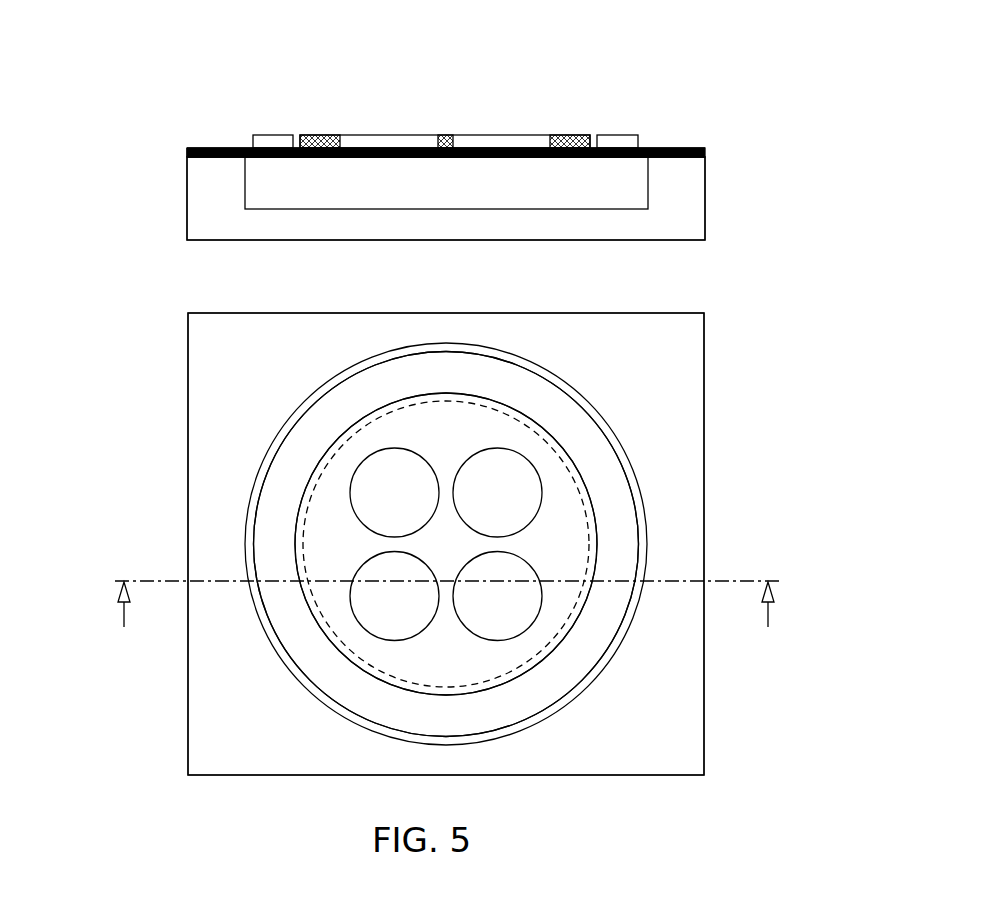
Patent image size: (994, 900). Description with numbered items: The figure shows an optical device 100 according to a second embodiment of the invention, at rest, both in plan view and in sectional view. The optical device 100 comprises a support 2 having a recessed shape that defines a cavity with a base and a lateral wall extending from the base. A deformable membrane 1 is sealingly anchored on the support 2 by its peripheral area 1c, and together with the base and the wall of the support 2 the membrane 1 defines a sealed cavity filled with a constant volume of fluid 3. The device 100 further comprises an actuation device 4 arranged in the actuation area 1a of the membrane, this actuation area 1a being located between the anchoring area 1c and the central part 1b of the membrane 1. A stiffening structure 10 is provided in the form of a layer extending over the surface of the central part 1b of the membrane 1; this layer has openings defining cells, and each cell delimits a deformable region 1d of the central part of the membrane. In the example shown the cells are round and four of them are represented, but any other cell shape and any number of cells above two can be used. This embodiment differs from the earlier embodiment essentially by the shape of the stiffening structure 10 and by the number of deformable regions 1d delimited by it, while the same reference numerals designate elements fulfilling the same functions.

The optical device 100 is at (138, 154).
The deformable membrane 1 is at (497, 663).
The actuation area 1a is at (277, 162).
The central part 1b is at (530, 108).
The peripheral area 1c is at (209, 145).
The deformable region 1d is at (387, 133).
The support 2 is at (683, 192).
The fluid 3 is at (585, 184).
The actuation device 4 is at (272, 134).
The stiffening structure 10 is at (445, 134).